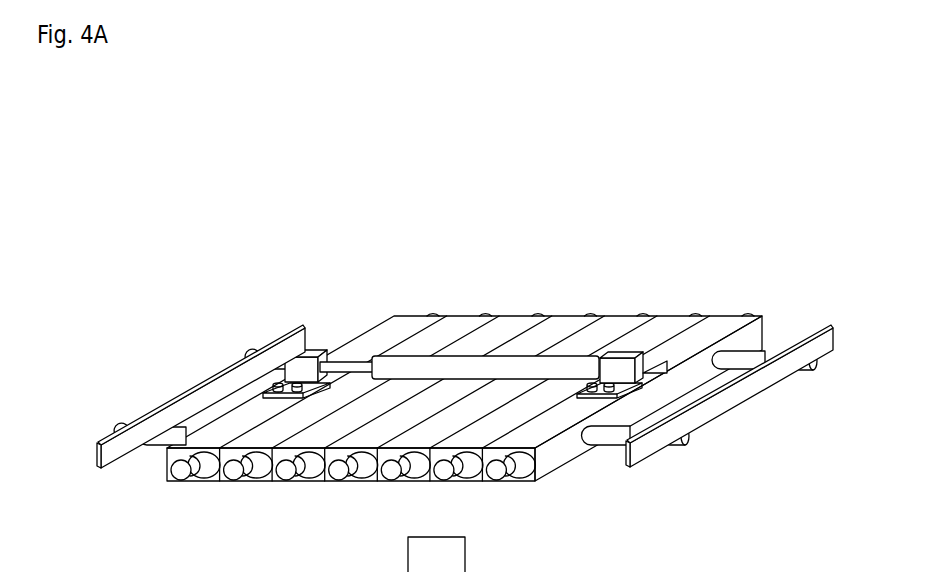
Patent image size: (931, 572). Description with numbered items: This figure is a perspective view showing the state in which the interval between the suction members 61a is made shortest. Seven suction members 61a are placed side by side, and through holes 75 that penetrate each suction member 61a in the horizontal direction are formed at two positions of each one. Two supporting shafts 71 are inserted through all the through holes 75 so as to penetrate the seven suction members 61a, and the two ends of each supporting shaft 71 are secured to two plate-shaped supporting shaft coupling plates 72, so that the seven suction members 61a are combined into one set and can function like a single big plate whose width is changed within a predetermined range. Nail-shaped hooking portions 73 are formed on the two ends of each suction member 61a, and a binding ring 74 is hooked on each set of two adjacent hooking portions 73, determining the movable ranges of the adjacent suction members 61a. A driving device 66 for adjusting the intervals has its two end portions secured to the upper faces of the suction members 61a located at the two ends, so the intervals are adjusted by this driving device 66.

The suction member 61a is at (668, 325).
The driving device 66 is at (467, 360).
The supporting shaft 71 is at (762, 358).
The supporting shaft coupling plate 72 is at (212, 393).
The hooking portion 73 is at (497, 470).
The binding ring 74 is at (217, 483).
The through hole 75 is at (572, 433).